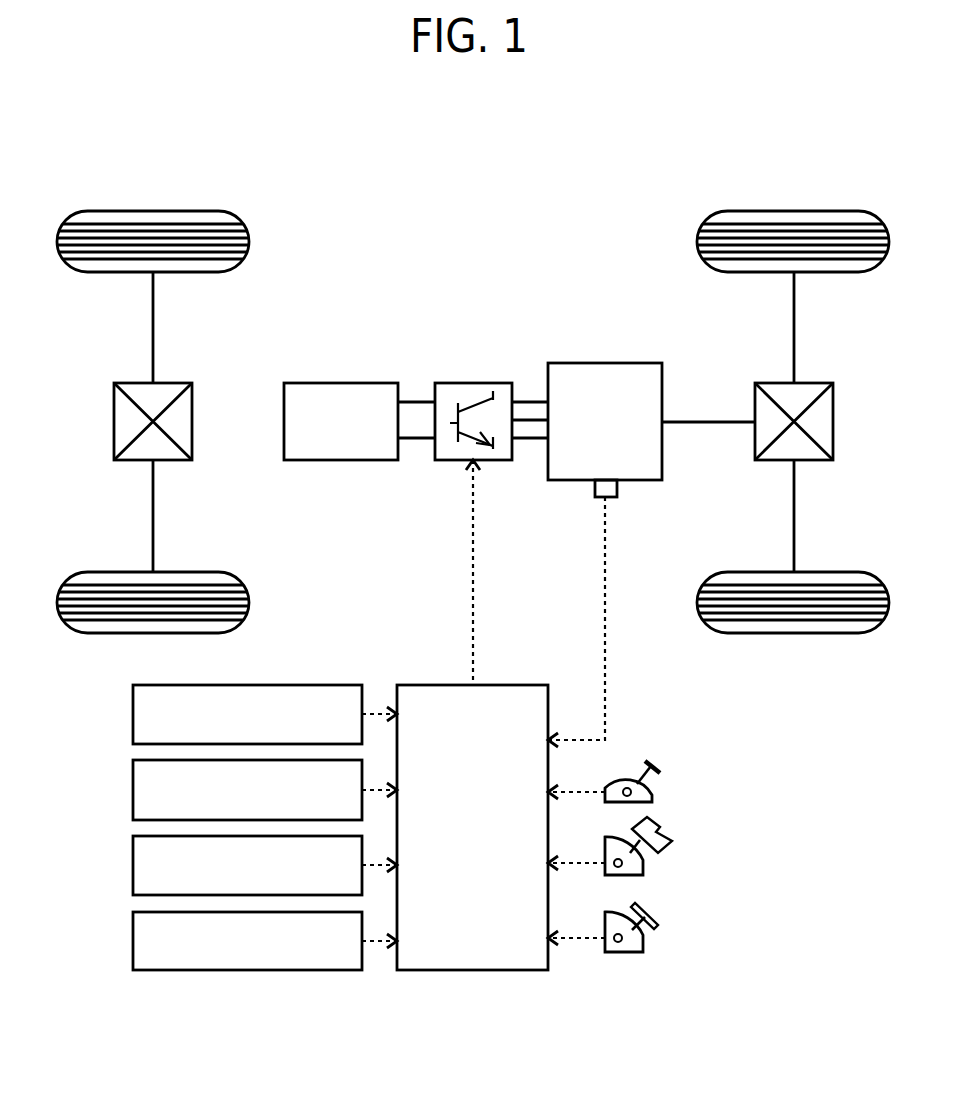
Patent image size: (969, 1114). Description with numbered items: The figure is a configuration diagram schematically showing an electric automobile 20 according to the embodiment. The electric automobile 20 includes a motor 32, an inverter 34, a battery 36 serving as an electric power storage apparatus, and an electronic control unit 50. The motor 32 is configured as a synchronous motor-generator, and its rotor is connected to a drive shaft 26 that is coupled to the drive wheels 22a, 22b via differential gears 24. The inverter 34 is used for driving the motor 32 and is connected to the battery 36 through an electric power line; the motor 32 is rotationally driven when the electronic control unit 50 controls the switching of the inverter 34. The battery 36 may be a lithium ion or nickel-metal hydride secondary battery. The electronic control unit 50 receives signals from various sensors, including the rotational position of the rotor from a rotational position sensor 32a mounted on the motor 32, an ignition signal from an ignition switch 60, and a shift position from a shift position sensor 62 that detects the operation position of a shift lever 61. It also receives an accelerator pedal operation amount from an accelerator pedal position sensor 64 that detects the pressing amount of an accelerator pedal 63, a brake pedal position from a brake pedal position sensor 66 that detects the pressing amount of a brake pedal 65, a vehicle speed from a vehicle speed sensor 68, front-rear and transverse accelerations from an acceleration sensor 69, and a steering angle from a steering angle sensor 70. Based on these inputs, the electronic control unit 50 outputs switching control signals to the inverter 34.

The electric automobile 20 is at (584, 184).
The drive wheel 22a is at (795, 211).
The drive wheel 22b is at (793, 632).
The differential gears 24 is at (820, 383).
The drive shaft 26 is at (708, 419).
The motor 32 is at (605, 363).
The rotational position sensor 32a is at (617, 498).
The inverter 34 is at (472, 382).
The battery 36 is at (342, 382).
The electronic control unit 50 is at (510, 684).
The ignition switch 60 is at (133, 715).
The shift lever 61 is at (658, 773).
The shift position sensor 62 is at (647, 792).
The accelerator pedal 63 is at (663, 848).
The accelerator pedal position sensor 64 is at (643, 865).
The brake pedal 65 is at (657, 923).
The brake pedal position sensor 66 is at (643, 940).
The vehicle speed sensor 68 is at (133, 790).
The acceleration sensor 69 is at (133, 865).
The steering angle sensor 70 is at (133, 940).